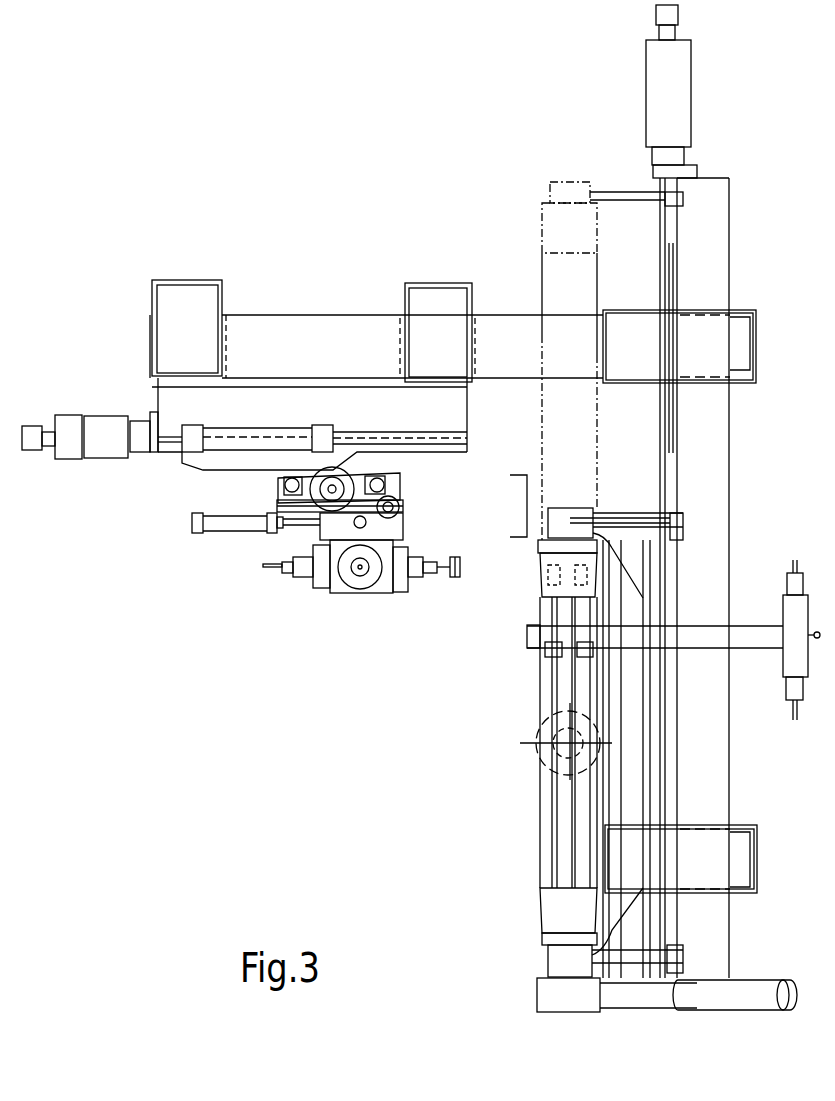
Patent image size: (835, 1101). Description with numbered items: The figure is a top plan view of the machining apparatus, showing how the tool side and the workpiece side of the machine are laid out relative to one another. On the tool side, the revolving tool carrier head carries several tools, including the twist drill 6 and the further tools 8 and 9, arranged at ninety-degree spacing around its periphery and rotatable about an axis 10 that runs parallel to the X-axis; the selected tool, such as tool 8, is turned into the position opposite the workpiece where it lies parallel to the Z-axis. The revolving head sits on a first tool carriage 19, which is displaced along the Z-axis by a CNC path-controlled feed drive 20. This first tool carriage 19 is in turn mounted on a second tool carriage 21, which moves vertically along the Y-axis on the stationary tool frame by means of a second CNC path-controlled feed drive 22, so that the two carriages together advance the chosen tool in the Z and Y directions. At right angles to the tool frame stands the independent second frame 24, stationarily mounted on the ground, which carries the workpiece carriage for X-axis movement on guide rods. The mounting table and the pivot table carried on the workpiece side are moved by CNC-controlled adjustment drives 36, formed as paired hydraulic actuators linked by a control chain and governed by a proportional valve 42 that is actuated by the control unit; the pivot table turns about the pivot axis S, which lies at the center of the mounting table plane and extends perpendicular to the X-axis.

The tool 6 is at (270, 567).
The tool 8 is at (450, 565).
The tool 9 is at (362, 566).
The axis 10 is at (360, 600).
The first tool carriage 19 is at (263, 460).
The CNC path-controlled feed drive 20 is at (70, 430).
The second tool carriage 21 is at (285, 502).
The CNC path-controlled feed drive 22 is at (335, 488).
The second frame 24 is at (712, 465).
The adjustment drives 36 is at (572, 558).
The proportional valve 42 is at (793, 662).
The pivot axis S is at (540, 745).